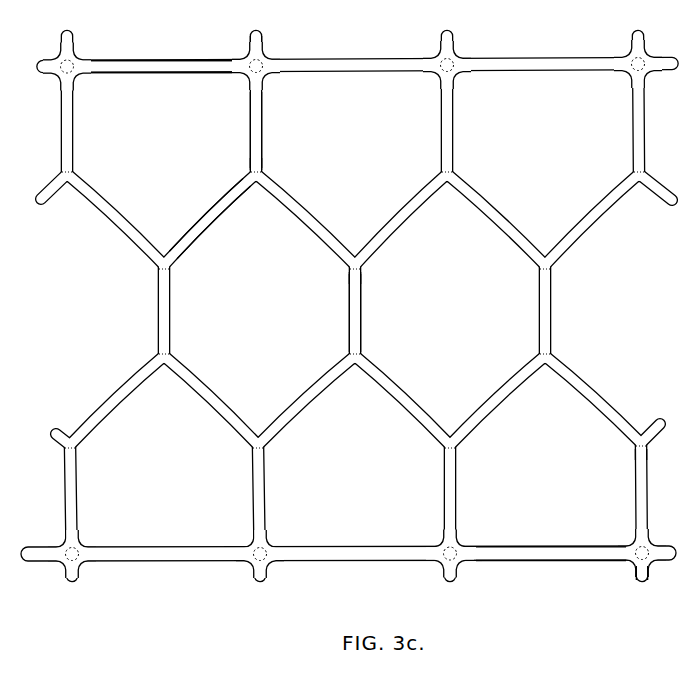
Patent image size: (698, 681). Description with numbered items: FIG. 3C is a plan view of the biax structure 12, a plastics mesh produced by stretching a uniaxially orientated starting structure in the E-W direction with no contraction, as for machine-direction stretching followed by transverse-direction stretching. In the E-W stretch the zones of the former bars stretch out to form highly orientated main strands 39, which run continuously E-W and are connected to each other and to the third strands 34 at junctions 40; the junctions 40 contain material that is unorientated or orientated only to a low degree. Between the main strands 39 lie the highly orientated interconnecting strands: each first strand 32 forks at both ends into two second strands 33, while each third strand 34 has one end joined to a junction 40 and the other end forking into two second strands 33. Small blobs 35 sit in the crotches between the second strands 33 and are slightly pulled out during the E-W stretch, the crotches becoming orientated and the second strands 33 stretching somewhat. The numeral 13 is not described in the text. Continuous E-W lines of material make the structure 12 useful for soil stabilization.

The biax structure 12 is at (177, 54).
The transverse bar 13 is at (548, 553).
The first strands 32 is at (352, 308).
The second strands 33 is at (288, 205).
The third strands 34 is at (254, 145).
The blobs 35 is at (258, 176).
The main strands 39 is at (137, 72).
The junctions 40 is at (251, 72).